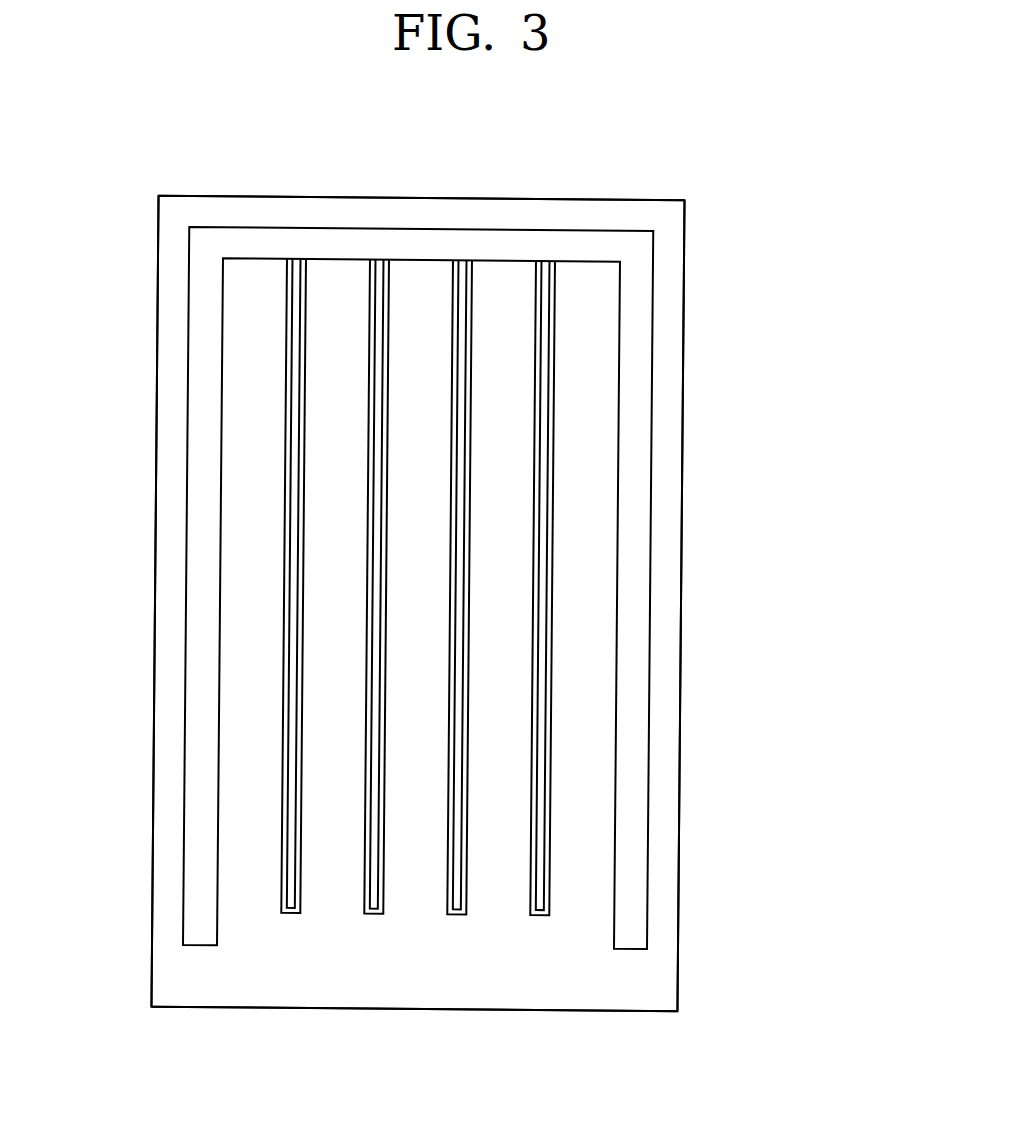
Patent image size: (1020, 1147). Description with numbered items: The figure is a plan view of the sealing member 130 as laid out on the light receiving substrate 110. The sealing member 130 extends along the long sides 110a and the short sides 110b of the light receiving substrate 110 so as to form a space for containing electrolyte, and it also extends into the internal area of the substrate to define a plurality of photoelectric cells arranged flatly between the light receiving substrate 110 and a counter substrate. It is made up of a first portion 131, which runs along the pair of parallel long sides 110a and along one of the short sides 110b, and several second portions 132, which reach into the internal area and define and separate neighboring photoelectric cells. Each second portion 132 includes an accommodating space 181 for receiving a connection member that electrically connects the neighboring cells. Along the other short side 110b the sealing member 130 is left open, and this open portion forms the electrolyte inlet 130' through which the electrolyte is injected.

The light receiving substrate 110 is at (675, 232).
The long sides 110a is at (155, 488).
The short sides 110b is at (398, 198).
The sealing member 130 is at (507, 588).
The first portion 131 is at (643, 340).
The second portion 132 is at (552, 296).
The accommodating space 181 is at (545, 560).
The electrolyte inlet 130' is at (434, 1009).